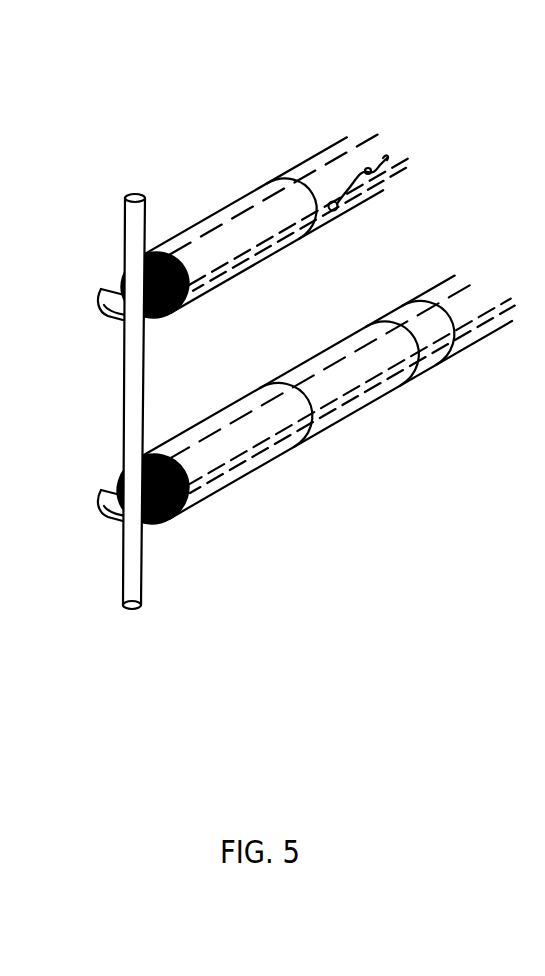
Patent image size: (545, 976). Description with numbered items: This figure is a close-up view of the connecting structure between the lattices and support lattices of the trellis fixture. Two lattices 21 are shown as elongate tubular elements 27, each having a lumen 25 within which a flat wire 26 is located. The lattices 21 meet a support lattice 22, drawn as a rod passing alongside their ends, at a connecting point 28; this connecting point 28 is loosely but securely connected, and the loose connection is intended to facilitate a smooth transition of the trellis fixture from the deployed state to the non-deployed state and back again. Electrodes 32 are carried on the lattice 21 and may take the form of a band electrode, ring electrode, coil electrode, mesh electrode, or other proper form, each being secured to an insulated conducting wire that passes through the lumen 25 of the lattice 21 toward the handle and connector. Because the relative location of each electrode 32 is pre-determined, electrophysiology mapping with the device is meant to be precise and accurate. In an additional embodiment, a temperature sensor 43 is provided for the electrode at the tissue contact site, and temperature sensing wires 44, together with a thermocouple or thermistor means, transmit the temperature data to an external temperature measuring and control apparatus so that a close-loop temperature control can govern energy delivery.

The lattice 21 is at (207, 208).
The support lattice 22 is at (125, 213).
The lumen 25 is at (326, 178).
The flat wire 26 is at (200, 297).
The elongate tubular element 27 is at (431, 280).
The connecting point 28 is at (112, 318).
The electrode 32 is at (423, 378).
The temperature sensor 43 is at (332, 211).
The temperature sensing wires 44 is at (373, 178).